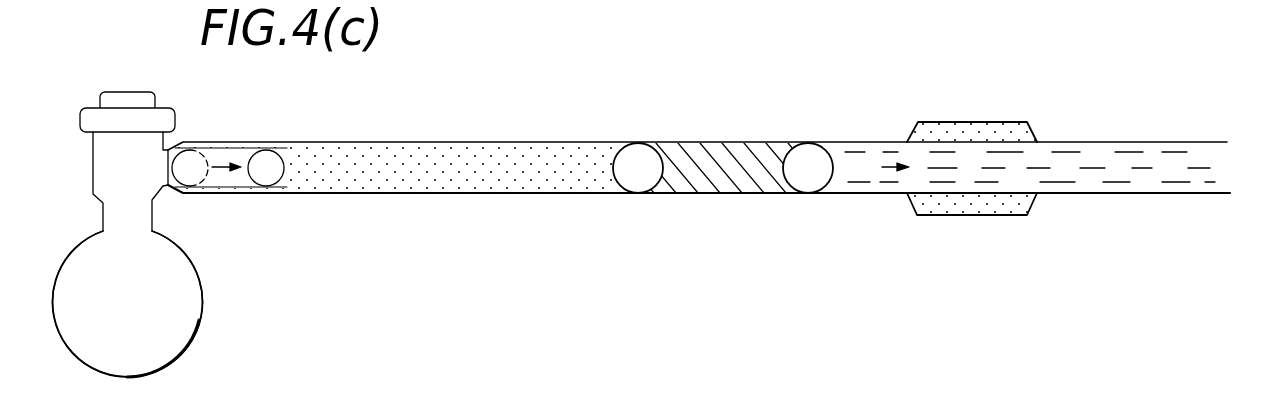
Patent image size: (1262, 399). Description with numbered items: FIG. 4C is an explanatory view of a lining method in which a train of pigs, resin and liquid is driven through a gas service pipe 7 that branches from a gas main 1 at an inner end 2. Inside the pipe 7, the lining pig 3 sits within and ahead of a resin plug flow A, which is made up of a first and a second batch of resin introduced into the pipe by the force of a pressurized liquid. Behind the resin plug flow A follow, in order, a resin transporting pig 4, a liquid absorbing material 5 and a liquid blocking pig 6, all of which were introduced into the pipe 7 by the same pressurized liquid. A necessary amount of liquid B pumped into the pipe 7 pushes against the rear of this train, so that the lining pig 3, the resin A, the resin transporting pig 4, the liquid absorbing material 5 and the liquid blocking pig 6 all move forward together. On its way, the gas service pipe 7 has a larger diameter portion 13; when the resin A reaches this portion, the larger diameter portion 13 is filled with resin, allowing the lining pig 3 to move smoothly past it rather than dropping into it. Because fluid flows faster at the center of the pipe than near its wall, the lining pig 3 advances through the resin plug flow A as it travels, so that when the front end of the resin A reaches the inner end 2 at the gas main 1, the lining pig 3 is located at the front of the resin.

The gas main 1 is at (203, 295).
The inner end 2 is at (168, 187).
The lining pig 3 is at (273, 160).
The resin transporting pig 4 is at (647, 155).
The liquid absorbing material 5 is at (755, 153).
The liquid blocking pig 6 is at (817, 160).
The pipe 7 is at (388, 195).
The larger diameter portion 13 is at (943, 202).
The resin plug flow A is at (510, 165).
The liquid B is at (1130, 182).